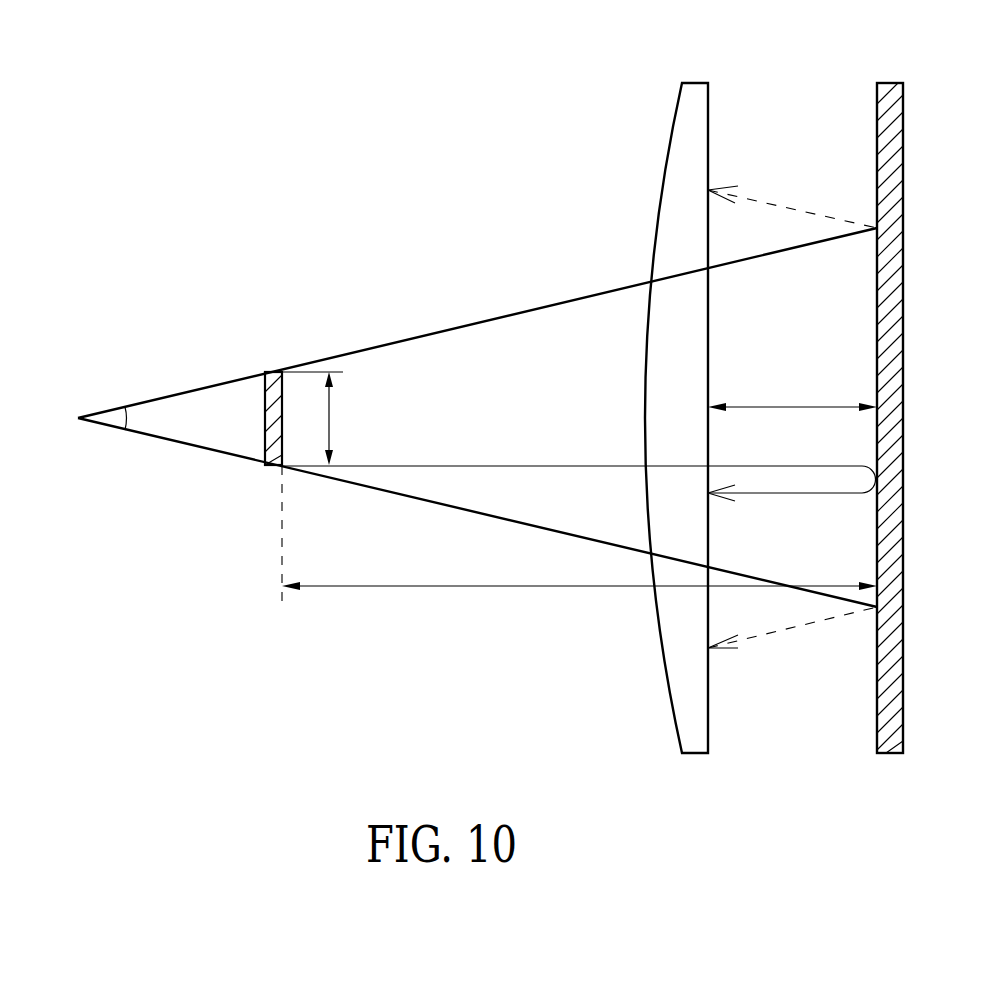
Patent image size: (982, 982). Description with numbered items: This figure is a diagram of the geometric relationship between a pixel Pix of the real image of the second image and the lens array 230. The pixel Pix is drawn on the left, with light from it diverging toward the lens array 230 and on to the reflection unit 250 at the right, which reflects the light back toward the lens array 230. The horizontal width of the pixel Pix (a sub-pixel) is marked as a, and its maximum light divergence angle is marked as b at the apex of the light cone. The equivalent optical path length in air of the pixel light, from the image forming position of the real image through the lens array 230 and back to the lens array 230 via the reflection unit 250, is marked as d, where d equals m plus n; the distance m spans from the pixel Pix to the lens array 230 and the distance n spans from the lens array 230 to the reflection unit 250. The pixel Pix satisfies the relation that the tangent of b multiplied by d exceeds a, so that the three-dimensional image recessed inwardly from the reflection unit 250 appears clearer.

The lens array 230 is at (688, 95).
The reflection unit 250 is at (888, 95).
The pixel Pix is at (268, 365).
The width of the pixel a is at (314, 418).
The light divergence angle of the pixel b is at (136, 419).
The optical path length from pixel to lens array m is at (579, 571).
The optical path length from lens array to reflection unit n is at (792, 391).
The equivalent optical path length d is at (579, 467).